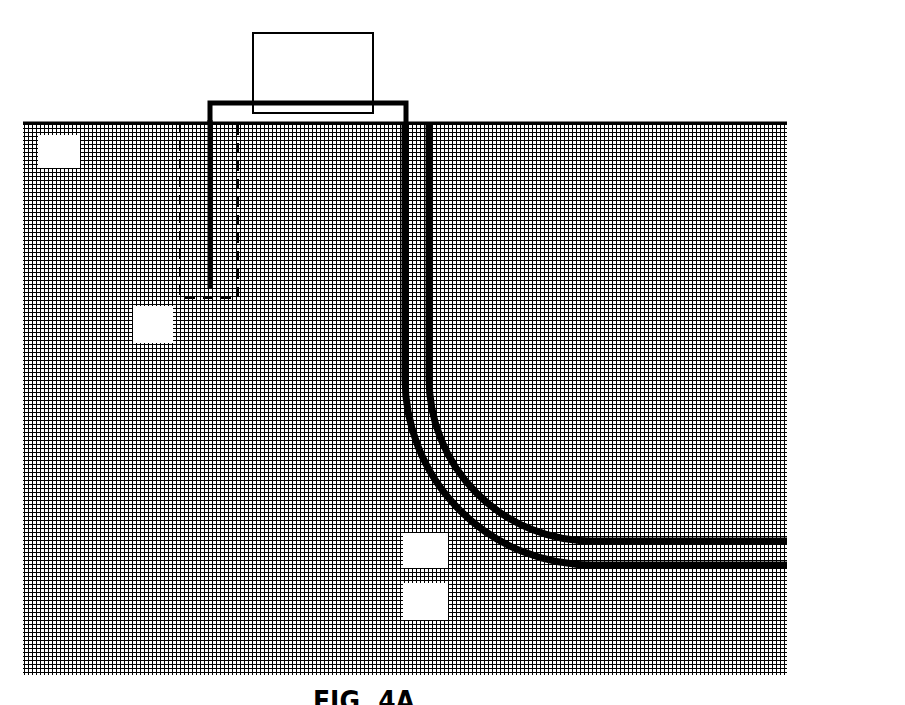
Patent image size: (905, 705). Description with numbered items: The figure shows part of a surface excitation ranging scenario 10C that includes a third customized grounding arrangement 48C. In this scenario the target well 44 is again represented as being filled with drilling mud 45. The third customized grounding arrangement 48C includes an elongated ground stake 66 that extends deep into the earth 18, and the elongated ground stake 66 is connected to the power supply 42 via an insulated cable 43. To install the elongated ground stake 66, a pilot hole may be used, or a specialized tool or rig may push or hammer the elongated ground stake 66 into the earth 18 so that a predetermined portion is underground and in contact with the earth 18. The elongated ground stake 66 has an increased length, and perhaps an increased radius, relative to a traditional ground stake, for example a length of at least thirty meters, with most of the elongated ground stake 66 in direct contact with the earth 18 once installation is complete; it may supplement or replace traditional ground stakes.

The surface excitation ranging scenario 10C is at (570, 66).
The earth 18 is at (43, 155).
The power supply 42 is at (245, 52).
The insulated cable 43 is at (196, 97).
The target well 44 is at (503, 549).
The drilling mud 45 is at (484, 514).
The third customized grounding arrangement 48C is at (172, 135).
The elongated ground stake 66 is at (200, 262).